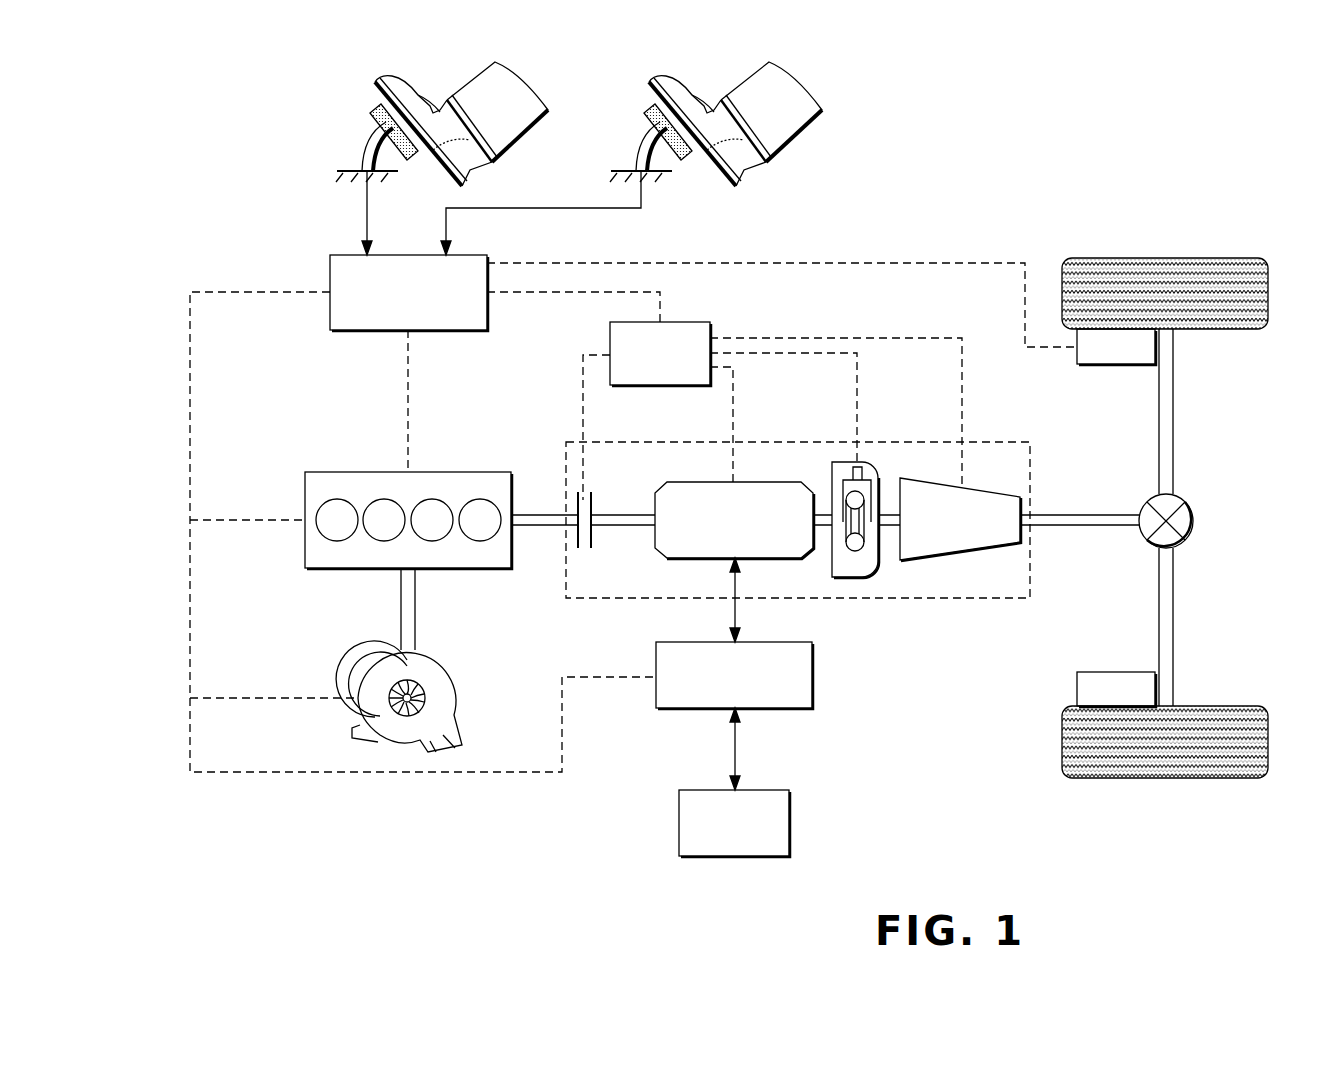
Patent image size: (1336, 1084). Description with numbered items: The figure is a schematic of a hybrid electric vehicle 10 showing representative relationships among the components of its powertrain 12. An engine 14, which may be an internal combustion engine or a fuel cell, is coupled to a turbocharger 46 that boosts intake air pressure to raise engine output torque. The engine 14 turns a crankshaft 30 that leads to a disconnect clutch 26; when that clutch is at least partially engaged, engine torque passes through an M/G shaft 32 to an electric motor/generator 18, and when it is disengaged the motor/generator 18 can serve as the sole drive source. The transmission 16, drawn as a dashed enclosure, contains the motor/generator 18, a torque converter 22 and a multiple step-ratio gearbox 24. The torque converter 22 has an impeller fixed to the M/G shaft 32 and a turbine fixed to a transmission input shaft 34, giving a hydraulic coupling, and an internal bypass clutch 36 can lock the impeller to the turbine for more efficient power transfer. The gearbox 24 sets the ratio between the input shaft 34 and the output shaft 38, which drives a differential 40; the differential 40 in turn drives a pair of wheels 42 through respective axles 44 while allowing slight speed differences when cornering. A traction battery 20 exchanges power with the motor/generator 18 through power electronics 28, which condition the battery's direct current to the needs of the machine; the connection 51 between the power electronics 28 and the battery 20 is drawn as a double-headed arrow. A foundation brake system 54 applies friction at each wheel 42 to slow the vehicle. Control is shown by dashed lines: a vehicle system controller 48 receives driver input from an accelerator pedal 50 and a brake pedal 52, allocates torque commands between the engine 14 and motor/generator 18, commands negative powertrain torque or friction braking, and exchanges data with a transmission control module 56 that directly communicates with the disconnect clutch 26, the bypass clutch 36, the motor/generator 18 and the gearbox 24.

The hybrid electric vehicle 10 is at (945, 166).
The powertrain 12 is at (406, 818).
The engine 14 is at (360, 472).
The transmission 16 is at (806, 442).
The electric motor/generator (M/G) 18 is at (698, 482).
The traction battery 20 is at (679, 823).
The torque converter 22 is at (855, 577).
The gearbox 24 is at (960, 562).
The disconnect clutch 26 is at (592, 538).
The power electronics 28 is at (656, 660).
The crankshaft 30 is at (550, 514).
The M/G shaft 32 is at (612, 514).
The transmission input shaft 34 is at (890, 514).
The bypass clutch 36 is at (860, 466).
The output shaft 38 is at (1080, 514).
The differential 40 is at (1194, 521).
The wheels 42 is at (1166, 258).
The axles 44 is at (1174, 413).
The turbocharger 46 is at (370, 666).
The vehicle system controller (VSC) 48 is at (345, 255).
The accelerator pedal 50 is at (375, 127).
The electrical connection 51 is at (735, 757).
The brake pedal 52 is at (649, 127).
The foundation brake system 54 is at (1117, 364).
The transmission control module (TCM) 56 is at (610, 336).